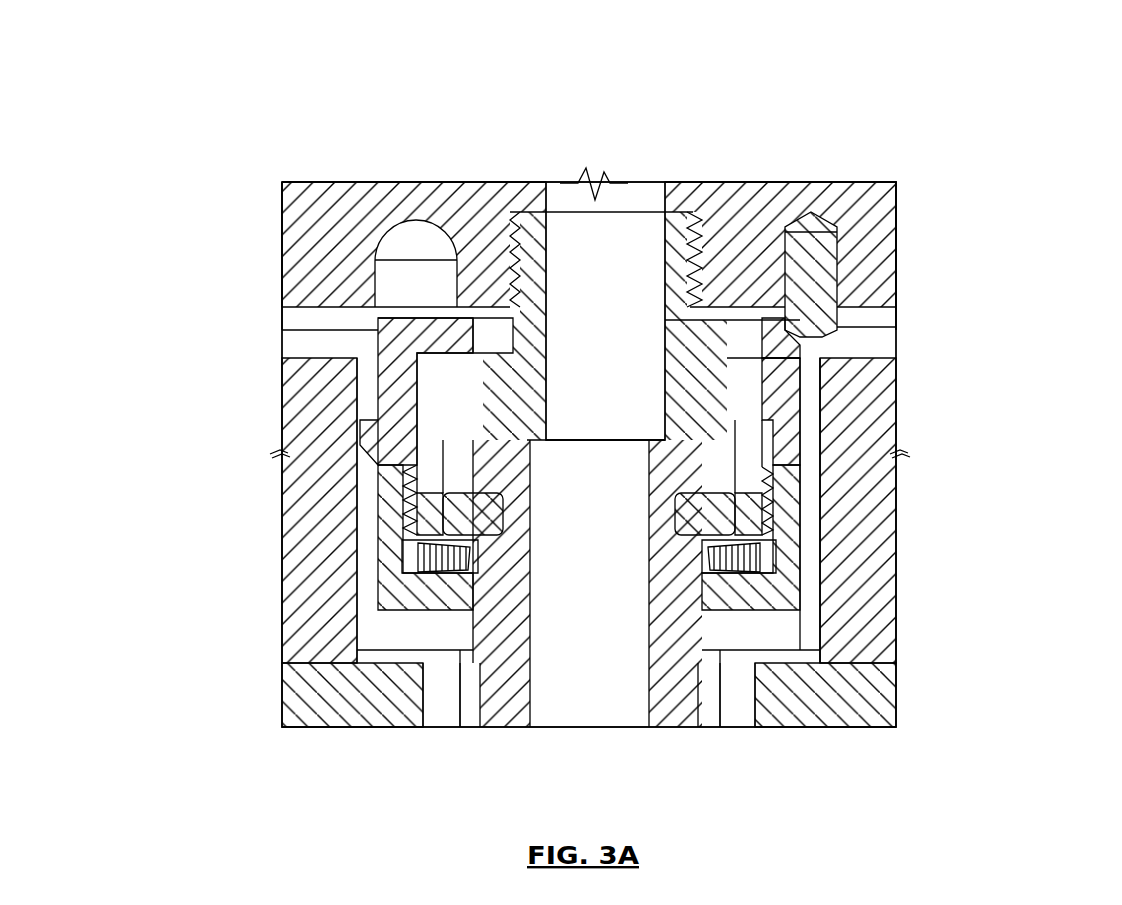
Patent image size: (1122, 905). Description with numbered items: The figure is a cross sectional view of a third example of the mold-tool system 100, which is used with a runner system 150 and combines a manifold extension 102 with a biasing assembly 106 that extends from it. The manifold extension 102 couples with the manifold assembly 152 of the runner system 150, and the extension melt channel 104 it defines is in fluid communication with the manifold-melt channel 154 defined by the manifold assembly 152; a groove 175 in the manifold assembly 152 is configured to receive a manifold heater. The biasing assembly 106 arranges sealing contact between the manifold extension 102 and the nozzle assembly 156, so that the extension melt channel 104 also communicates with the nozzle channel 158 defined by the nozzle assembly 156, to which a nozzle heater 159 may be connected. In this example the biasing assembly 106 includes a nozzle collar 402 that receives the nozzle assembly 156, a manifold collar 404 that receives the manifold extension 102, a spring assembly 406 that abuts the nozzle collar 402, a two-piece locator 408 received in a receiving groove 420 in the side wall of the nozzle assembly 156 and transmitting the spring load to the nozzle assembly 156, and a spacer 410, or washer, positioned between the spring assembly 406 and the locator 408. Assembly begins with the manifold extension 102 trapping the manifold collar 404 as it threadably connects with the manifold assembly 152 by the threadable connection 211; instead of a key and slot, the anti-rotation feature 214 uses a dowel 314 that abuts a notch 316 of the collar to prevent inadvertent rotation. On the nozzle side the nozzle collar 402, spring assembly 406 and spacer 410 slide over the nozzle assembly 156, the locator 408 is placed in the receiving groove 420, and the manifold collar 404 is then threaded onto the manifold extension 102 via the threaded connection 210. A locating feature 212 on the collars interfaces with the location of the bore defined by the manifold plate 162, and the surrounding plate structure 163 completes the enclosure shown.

The mold-tool system 100 is at (110, 222).
The manifold extension 102 is at (505, 287).
The biasing assembly 106 is at (178, 275).
The runner system 150 is at (904, 92).
The manifold assembly 152 is at (848, 195).
The manifold-melt channel 154 is at (582, 182).
The extension melt channel 104 is at (640, 240).
The groove 175 is at (413, 267).
The threadable connection 211 is at (530, 278).
The dowel 314 is at (820, 272).
The anti-rotation feature 214 is at (987, 222).
The notch 316 is at (777, 327).
The manifold collar 404 is at (422, 337).
The locator 408 is at (445, 530).
The spacer 410 is at (465, 512).
The spring assembly 406 is at (423, 555).
The nozzle collar 402 is at (413, 590).
The receiving groove 420 is at (490, 548).
The threaded connection 210 is at (772, 492).
The locating feature 212 is at (823, 432).
The nozzle channel 158 is at (596, 700).
The nozzle heater 159 is at (466, 717).
The nozzle assembly 156 is at (683, 712).
The manifold plate 162 is at (885, 633).
The base plate 163 is at (885, 703).